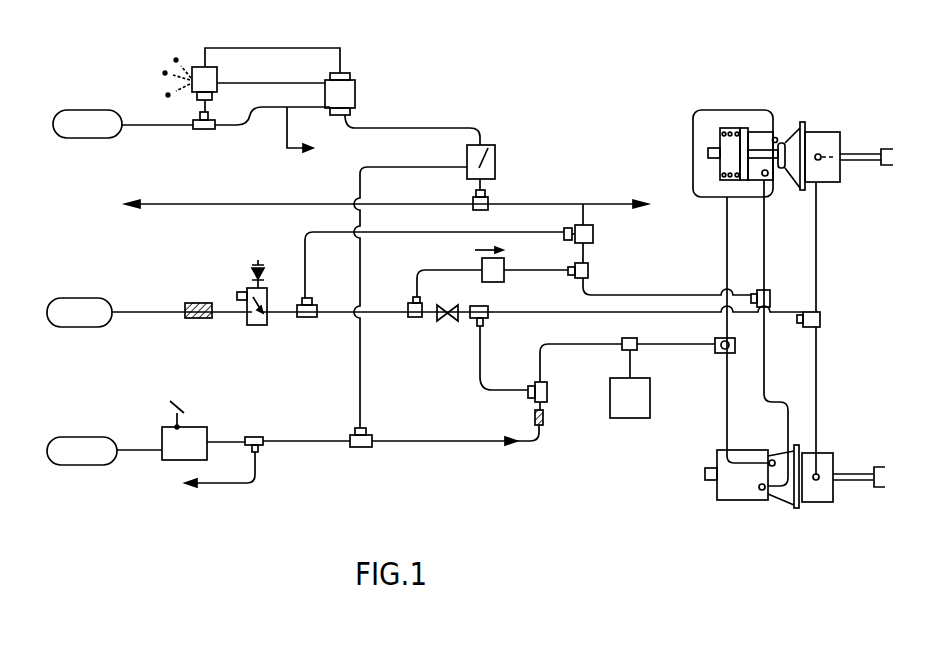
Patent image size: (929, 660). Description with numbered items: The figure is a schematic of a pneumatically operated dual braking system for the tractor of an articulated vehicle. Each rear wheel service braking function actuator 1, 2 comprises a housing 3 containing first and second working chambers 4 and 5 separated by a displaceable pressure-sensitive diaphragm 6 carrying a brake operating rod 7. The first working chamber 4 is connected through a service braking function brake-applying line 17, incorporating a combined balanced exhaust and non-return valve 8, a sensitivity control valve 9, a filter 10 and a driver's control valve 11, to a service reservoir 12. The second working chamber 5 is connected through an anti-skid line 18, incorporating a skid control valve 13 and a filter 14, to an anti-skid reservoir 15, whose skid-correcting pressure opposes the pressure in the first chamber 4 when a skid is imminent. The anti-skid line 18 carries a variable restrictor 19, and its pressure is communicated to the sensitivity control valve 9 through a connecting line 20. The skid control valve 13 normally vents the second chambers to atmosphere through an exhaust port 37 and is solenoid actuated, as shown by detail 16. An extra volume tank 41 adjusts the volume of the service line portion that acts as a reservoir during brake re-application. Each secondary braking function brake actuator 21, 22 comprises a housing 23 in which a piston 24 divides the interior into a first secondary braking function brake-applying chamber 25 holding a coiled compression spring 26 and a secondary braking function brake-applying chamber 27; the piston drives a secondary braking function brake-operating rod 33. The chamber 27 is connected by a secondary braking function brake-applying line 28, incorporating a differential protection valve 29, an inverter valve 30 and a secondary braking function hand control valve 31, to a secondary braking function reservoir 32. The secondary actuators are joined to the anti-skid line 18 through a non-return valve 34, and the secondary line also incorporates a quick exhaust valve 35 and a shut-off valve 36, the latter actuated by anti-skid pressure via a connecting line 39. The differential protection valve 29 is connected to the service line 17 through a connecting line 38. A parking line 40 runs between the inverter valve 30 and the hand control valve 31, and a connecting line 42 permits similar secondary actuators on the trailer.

The rear wheel service braking function actuator 1 is at (846, 164).
The rear wheel service braking function actuator 2 is at (808, 500).
The housing 3 is at (838, 172).
The first working chamber 4 is at (792, 172).
The second working chamber 5 is at (822, 162).
The pressure-sensitive diaphragm 6 is at (790, 128).
The brake operating rod 7 is at (868, 154).
The combined balanced exhaust and non-return valve 8 is at (727, 353).
The sensitivity control valve 9 is at (547, 392).
The filter 10 is at (541, 422).
The driver's control valve 11 is at (182, 445).
The service reservoir 12 is at (78, 440).
The skid control valve 13 is at (258, 325).
The filter 14 is at (194, 320).
The anti-skid reservoir 15 is at (92, 312).
The solenoid actuation detail 16 is at (256, 266).
The service braking function brake-applying line 17 is at (452, 441).
The anti-skid line 18 is at (538, 312).
The restrictor 19 is at (440, 320).
The connecting line 20 is at (480, 372).
The secondary braking function brake actuator 21 is at (738, 128).
The secondary braking function brake actuator 22 is at (730, 494).
The housing 23 is at (718, 200).
The piston 24 is at (744, 130).
The first secondary braking function brake-applying chamber 25 is at (721, 140).
The coiled compression spring 26 is at (720, 178).
The secondary braking function brake-applying chamber 27 is at (762, 200).
The secondary braking function brake-applying line 28 is at (405, 128).
The differential protection valve 29 is at (490, 145).
The inverter valve 30 is at (355, 95).
The secondary braking function hand control valve 31 is at (198, 70).
The secondary braking function reservoir 32 is at (108, 112).
The secondary braking function brake-operating rod 33 is at (758, 150).
The non-return valve 34 is at (482, 264).
The quick exhaust valve 35 is at (765, 290).
The shut-off valve 36 is at (593, 234).
The exhaust port 37 is at (232, 294).
The connecting line 38 is at (360, 262).
The connecting line 39 is at (430, 232).
The parking line 40 is at (318, 48).
The extra volume tank 41 is at (632, 416).
The connecting line 42 is at (593, 204).